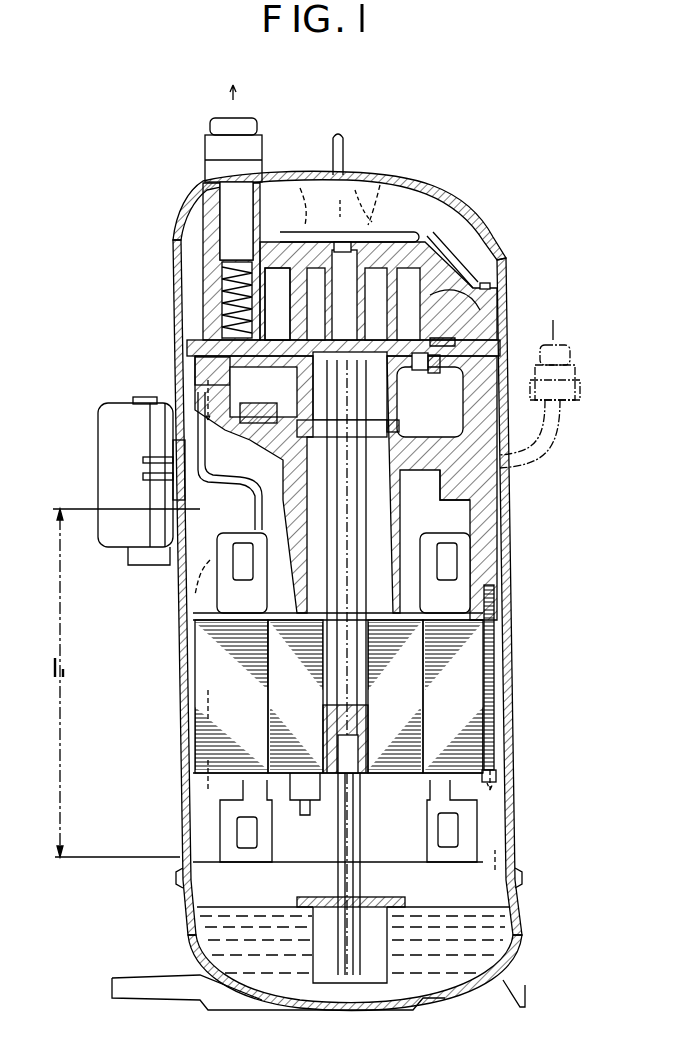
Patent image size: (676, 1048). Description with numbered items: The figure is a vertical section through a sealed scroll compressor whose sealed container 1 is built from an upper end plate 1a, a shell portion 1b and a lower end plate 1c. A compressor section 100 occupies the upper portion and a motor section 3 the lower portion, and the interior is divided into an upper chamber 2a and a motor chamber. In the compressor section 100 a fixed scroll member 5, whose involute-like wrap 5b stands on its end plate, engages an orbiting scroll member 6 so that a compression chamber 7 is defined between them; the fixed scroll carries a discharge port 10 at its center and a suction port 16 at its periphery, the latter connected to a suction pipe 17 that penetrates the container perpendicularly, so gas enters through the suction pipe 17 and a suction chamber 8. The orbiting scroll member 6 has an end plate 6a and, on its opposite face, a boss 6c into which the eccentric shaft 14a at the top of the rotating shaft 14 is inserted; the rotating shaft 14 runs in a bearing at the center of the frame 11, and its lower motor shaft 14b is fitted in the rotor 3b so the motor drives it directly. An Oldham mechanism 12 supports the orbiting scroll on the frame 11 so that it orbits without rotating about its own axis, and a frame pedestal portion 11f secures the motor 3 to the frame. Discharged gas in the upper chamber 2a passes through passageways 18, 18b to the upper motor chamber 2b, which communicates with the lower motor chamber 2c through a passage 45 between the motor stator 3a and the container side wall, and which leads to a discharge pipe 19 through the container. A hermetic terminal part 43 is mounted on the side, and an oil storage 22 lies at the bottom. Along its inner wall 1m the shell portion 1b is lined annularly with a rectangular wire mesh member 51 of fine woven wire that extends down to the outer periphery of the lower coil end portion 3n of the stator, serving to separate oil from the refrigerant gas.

The sealed container 1 is at (364, 192).
The upper end plate 1a is at (436, 202).
The shell portion 1b is at (508, 650).
The lower end plate 1c is at (433, 997).
The inner wall 1m is at (504, 800).
The upper chamber 2a is at (392, 202).
The upper motor chamber 2b is at (190, 440).
The lower motor chamber 2c is at (212, 825).
The motor section 3 is at (472, 832).
The motor stator 3a is at (470, 720).
The rotor 3b is at (270, 694).
The lower coil end portion 3n is at (448, 862).
The fixed scroll member 5 is at (499, 255).
The wrap 5b is at (396, 290).
The orbiting scroll member 6 is at (499, 275).
The end plate 6a is at (469, 326).
The boss 6c is at (393, 408).
The compression chamber 7 is at (314, 278).
The suction chamber 8 is at (286, 337).
The discharge port 10 is at (348, 260).
The frame 11 is at (492, 470).
The frame pedestal portion 11f is at (482, 541).
The Oldham mechanism 12 is at (434, 383).
The rotating shaft 14 is at (440, 611).
The eccentric shaft 14a is at (458, 349).
The motor shaft 14b is at (340, 698).
The suction port 16 is at (222, 296).
The suction pipe 17 is at (260, 158).
The passageways 18 is at (67, 313).
The passageway 18b is at (190, 375).
The discharge pipe 19 is at (581, 390).
The oil storage 22 is at (490, 942).
The hermetic terminal part 43 is at (104, 474).
The passage 45 is at (195, 667).
The wire mesh member 51 is at (186, 602).
The compressor section 100 is at (449, 224).